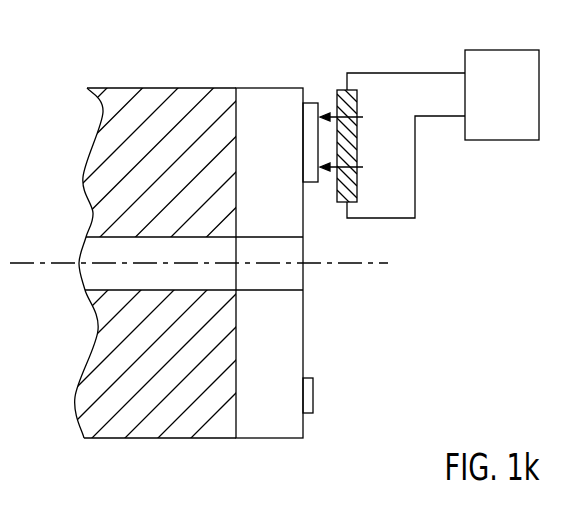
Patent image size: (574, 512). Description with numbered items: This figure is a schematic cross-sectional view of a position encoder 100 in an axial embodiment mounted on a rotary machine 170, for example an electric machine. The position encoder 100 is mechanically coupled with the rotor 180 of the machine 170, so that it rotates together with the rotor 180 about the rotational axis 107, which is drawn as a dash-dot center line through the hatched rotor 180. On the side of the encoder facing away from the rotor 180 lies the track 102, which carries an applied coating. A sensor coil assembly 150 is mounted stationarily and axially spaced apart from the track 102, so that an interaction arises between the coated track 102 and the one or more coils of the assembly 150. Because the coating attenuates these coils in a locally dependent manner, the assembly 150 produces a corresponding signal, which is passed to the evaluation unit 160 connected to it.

The position encoder 100 is at (247, 80).
The track 102 is at (312, 103).
The rotational axis 107 is at (68, 263).
The sensor coil assembly 150 is at (364, 110).
The evaluation unit 160 is at (483, 105).
The rotary machine 170 is at (78, 97).
The rotor 180 is at (147, 177).